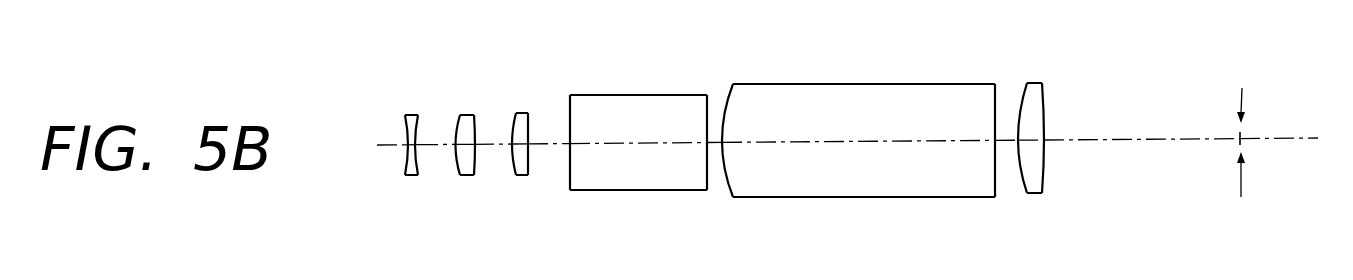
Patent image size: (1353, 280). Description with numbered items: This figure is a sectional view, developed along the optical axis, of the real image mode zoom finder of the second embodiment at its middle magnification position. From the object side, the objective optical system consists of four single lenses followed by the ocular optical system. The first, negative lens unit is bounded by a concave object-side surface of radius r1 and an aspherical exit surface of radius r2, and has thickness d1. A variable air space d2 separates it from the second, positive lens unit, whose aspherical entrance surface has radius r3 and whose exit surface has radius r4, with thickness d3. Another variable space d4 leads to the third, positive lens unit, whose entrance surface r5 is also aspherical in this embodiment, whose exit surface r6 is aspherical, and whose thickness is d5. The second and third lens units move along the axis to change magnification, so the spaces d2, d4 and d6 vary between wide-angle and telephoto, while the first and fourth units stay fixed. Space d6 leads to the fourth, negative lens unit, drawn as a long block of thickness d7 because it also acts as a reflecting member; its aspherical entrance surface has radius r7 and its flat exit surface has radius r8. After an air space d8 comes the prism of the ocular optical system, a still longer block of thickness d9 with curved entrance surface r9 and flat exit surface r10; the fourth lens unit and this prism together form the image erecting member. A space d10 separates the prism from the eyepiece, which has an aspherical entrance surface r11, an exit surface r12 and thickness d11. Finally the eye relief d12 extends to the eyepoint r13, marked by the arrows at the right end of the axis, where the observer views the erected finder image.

The radius of curvature of the object-side surface of the first lens unit r1 is at (403, 118).
The radius of curvature of the exit surface of the first lens unit r2 is at (418, 132).
The radius of curvature of the entrance surface of the second lens unit r3 is at (456, 125).
The radius of curvature of the exit surface of the second lens unit r4 is at (474, 130).
The radius of curvature of the entrance surface of the third lens unit r5 is at (513, 122).
The radius of curvature of the exit surface of the third lens unit r6 is at (529, 130).
The radius of curvature of the entrance surface of the fourth lens unit r7 is at (570, 115).
The radius of curvature of the exit surface of the fourth lens unit r8 is at (708, 98).
The radius of curvature of the entrance surface of the prism r9 is at (727, 100).
The radius of curvature of the exit surface of the prism r10 is at (996, 102).
The radius of curvature of the entrance surface of the eyepiece r11 is at (1020, 90).
The radius of curvature of the exit surface of the eyepiece r12 is at (1045, 110).
The eyepoint r13 is at (1242, 88).
The thickness of the first lens unit d1 is at (407, 150).
The space between the first and second lens units d2 is at (438, 147).
The thickness of the second lens unit d3 is at (467, 175).
The space between the second and third lens units d4 is at (493, 148).
The thickness of the third lens unit d5 is at (518, 175).
The space between the third and fourth lens units d6 is at (552, 147).
The thickness of the fourth lens unit d7 is at (628, 143).
The space between the fourth lens unit and the prism d8 is at (713, 143).
The thickness of the prism d9 is at (868, 142).
The space between the prism and the eyepiece d10 is at (1005, 142).
The thickness of the eyepiece d11 is at (1032, 142).
The distance from the eyepiece to the eyepoint d12 is at (1143, 139).